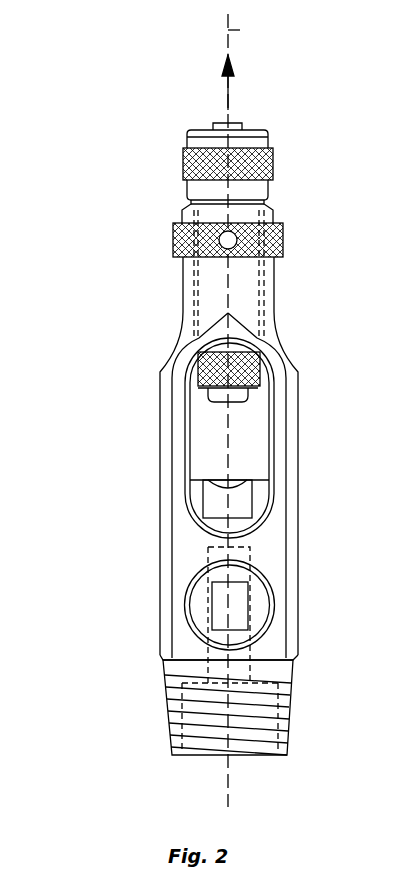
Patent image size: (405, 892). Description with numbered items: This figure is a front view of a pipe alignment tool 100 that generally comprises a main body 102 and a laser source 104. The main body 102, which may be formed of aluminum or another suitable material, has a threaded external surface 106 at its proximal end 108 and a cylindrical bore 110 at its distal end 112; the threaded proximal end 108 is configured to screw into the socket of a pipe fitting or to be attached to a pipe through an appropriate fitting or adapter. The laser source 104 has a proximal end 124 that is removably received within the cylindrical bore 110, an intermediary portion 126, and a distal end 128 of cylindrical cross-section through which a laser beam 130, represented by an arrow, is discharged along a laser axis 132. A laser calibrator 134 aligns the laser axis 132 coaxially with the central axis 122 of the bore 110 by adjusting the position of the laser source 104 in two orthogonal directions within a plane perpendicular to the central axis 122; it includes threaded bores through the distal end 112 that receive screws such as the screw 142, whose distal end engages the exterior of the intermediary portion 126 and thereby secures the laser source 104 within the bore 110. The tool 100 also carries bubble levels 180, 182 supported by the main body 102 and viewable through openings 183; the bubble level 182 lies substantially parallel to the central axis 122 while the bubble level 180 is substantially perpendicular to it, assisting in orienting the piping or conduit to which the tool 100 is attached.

The pipe alignment tool 100 is at (88, 112).
The main body 102 is at (160, 383).
The laser source 104 is at (195, 190).
The threaded external surface 106 is at (287, 714).
The proximal end 108 is at (165, 692).
The cylindrical bore 110 is at (267, 295).
The distal end 112 is at (270, 268).
The central axis 122 is at (228, 457).
The proximal end 124 is at (253, 378).
The intermediary portion 126 is at (207, 285).
The distal end 128 is at (265, 166).
The laser beam 130 is at (228, 98).
The laser axis 132 is at (240, 30).
The laser calibrator 134 is at (292, 238).
The screw 142 is at (180, 241).
The bubble level 180 is at (262, 496).
The bubble level 182 is at (213, 604).
The openings 183 is at (253, 437).